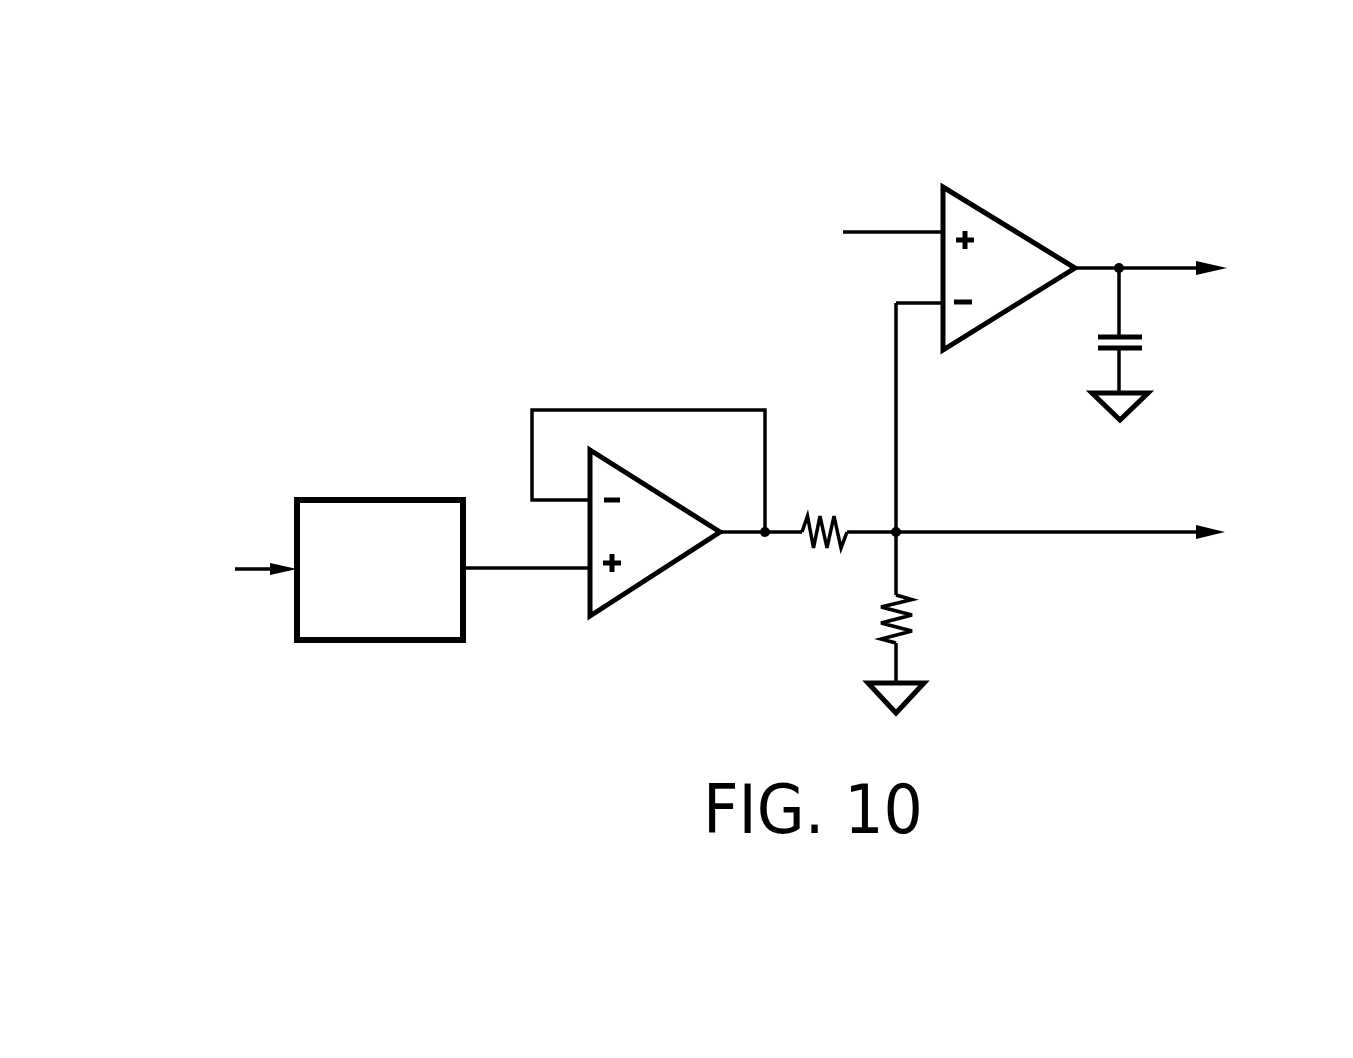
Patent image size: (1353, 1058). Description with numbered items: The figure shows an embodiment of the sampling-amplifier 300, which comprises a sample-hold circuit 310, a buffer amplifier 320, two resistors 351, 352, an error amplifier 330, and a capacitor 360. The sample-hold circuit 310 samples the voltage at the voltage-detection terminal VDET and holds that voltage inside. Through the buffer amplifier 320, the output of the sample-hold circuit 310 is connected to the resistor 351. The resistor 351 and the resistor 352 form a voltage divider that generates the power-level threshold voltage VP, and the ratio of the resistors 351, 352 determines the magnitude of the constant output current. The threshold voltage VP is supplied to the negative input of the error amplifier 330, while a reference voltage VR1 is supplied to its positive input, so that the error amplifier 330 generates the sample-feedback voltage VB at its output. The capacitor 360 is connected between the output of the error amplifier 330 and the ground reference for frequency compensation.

The sampling-amplifier 300 is at (1340, 131).
The sample-hold circuit 310 is at (383, 497).
The buffer amplifier 320 is at (660, 580).
The error amplifier 330 is at (1015, 220).
The resistor 351 is at (818, 510).
The resistor 352 is at (917, 617).
The capacitor 360 is at (1145, 342).